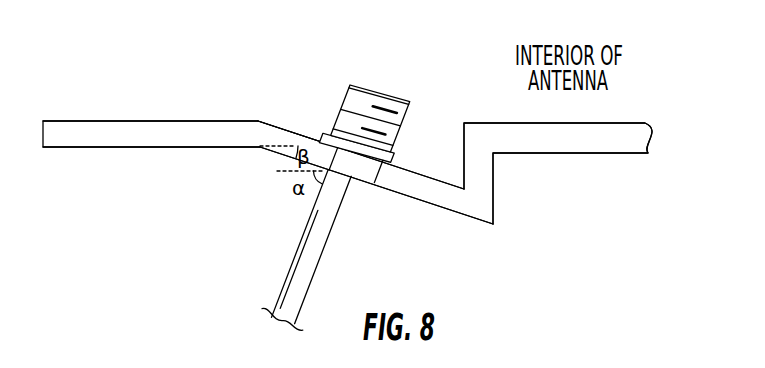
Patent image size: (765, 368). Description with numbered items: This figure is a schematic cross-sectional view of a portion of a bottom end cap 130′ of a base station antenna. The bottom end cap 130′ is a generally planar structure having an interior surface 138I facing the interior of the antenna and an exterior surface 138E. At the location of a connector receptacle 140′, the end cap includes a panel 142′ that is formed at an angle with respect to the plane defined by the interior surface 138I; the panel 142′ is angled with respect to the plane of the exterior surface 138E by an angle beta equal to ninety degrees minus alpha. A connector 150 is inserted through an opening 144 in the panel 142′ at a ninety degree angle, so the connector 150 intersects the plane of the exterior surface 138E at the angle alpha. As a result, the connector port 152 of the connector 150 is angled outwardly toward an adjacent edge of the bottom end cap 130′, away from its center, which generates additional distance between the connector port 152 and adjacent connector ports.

The bottom end cap 130′ is at (620, 153).
The interior surface 138I is at (210, 121).
The exterior surface 138E is at (111, 148).
The connector receptacle 140′ is at (452, 119).
The panel 142′ is at (408, 195).
The opening 144 is at (296, 129).
The connector 150 is at (373, 73).
The connector port 152 is at (305, 229).